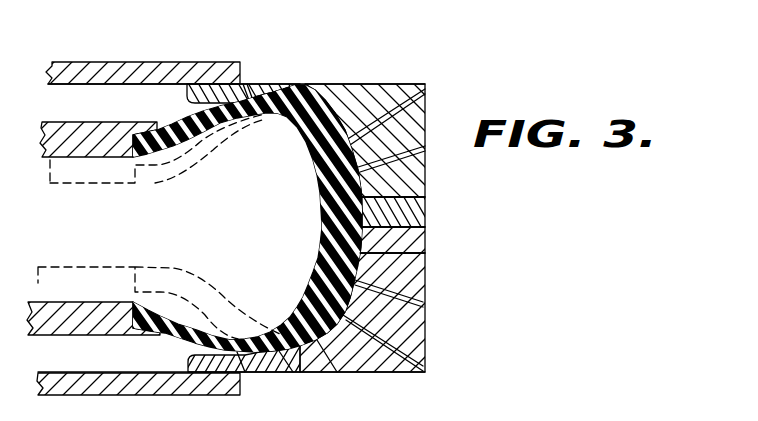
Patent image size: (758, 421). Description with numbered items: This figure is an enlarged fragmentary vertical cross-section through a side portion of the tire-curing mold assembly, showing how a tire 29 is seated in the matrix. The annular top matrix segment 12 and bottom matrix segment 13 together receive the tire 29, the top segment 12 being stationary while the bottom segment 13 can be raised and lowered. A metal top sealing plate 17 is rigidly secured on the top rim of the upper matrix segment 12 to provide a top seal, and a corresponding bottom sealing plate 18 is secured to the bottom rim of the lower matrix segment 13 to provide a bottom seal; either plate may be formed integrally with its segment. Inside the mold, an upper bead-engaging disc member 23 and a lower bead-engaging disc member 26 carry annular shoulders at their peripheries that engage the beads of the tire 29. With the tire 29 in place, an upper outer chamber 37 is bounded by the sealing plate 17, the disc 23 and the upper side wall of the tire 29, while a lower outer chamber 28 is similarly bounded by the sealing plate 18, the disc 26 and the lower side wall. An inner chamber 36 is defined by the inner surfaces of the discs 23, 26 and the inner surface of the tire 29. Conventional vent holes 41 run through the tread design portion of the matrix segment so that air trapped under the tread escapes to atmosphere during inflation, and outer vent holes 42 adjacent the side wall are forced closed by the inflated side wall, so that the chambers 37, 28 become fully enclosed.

The top matrix segment 12 is at (425, 118).
The bottom matrix segment 13 is at (427, 328).
The top sealing plate 17 is at (133, 68).
The bottom sealing plate 18 is at (123, 388).
The upper bead-engaging disc member 23 is at (80, 130).
The lower bead-engaging disc member 26 is at (45, 327).
The lower outer chamber 28 is at (108, 366).
The tire 29 is at (317, 220).
The inner chamber 36 is at (115, 256).
The upper outer chamber 37 is at (72, 95).
The vent holes 41 is at (423, 139).
The outer vent holes 42 is at (248, 100).